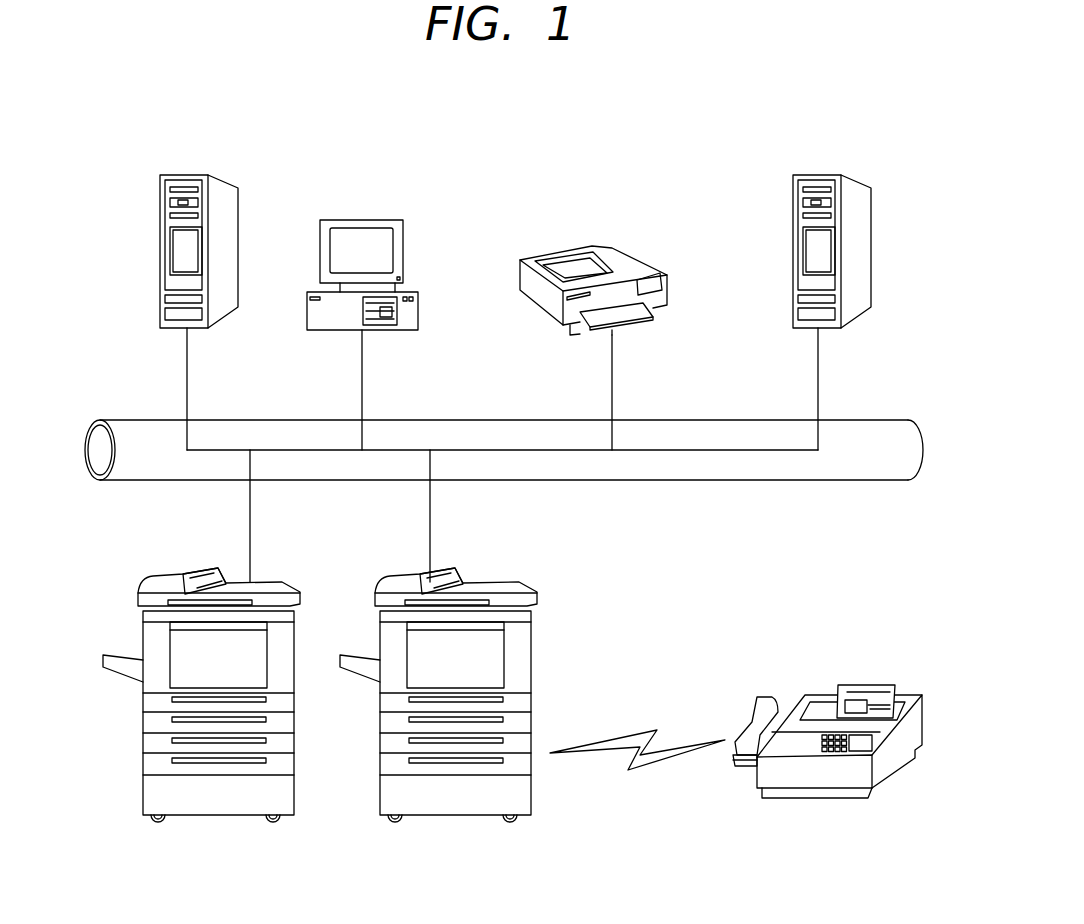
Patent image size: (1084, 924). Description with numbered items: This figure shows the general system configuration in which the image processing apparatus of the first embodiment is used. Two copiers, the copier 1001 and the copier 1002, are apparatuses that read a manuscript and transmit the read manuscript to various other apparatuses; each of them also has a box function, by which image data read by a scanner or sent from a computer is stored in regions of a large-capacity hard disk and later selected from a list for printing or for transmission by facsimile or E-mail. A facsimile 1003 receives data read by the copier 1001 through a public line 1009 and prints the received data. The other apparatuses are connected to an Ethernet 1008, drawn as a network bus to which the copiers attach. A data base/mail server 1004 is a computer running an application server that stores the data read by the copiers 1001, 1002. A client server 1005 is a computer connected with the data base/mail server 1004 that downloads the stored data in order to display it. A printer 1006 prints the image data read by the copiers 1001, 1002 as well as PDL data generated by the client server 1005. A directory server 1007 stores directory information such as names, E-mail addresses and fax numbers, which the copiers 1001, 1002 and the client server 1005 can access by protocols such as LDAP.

The copier 1001 is at (427, 808).
The copier 1002 is at (203, 808).
The facsimile 1003 is at (783, 792).
The data base/mail server 1004 is at (180, 177).
The client server 1005 is at (342, 221).
The printer 1006 is at (571, 251).
The directory server 1007 is at (812, 175).
The Ethernet 1008 is at (762, 481).
The public line 1009 is at (629, 771).